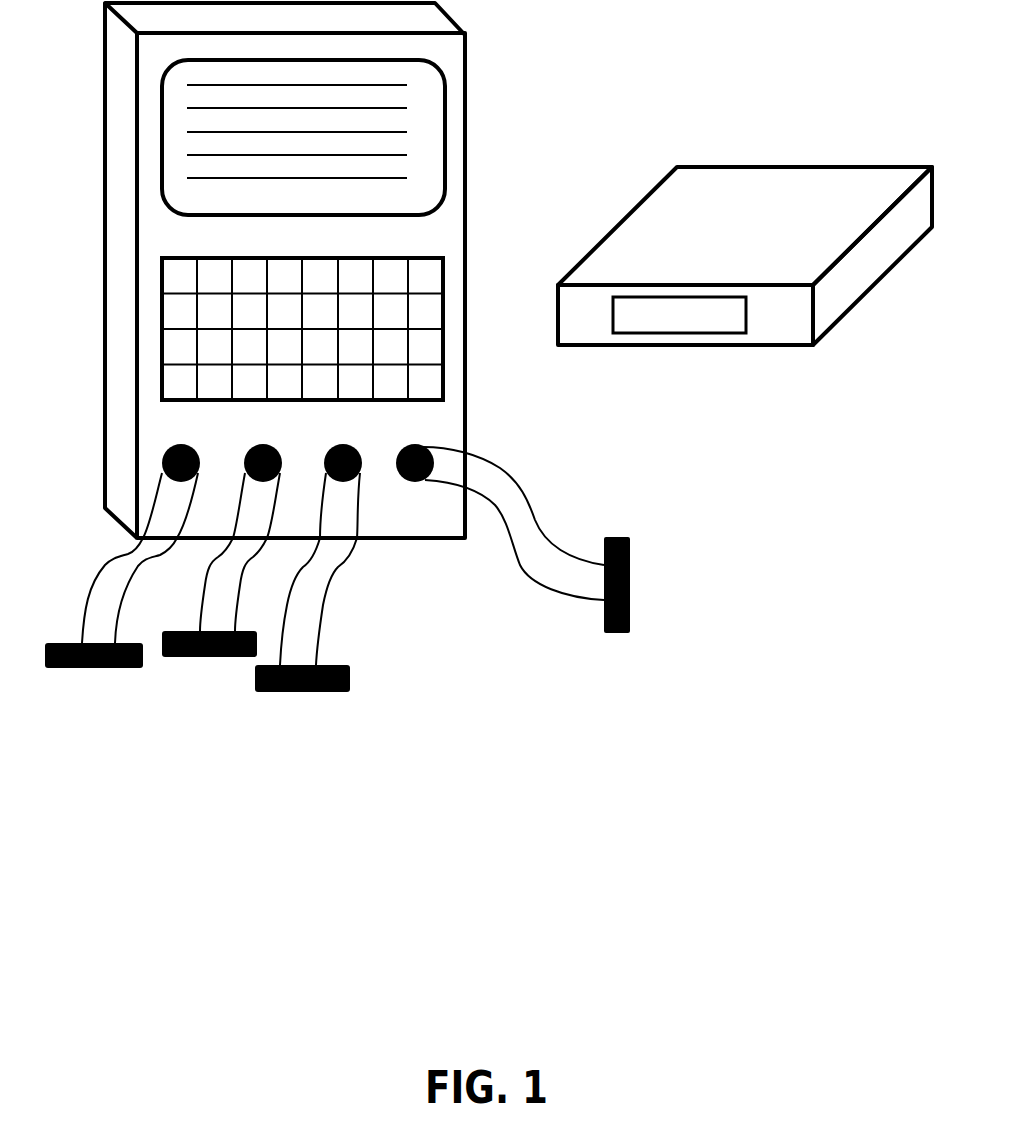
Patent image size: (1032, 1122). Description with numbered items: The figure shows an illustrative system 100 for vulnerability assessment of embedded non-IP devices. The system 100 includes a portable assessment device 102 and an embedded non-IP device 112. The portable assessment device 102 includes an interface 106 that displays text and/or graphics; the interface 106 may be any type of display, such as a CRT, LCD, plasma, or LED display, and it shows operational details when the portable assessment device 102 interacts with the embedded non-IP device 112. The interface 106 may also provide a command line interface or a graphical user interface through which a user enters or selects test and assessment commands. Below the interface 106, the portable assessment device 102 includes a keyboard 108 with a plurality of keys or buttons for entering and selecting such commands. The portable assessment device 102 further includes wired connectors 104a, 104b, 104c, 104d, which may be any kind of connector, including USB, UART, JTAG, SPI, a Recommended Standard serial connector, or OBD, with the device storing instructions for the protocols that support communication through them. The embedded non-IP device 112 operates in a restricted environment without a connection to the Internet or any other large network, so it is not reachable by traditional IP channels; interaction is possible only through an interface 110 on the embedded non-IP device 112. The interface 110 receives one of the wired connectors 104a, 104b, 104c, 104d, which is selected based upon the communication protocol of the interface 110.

The system 100 is at (474, 528).
The portable assessment device 102 is at (325, 429).
The wired connector 104a is at (80, 668).
The wired connector 104b is at (202, 657).
The wired connector 104c is at (302, 692).
The wired connector 104d is at (603, 633).
The interface 106 is at (430, 143).
The keyboard 108 is at (430, 283).
The interface 110 is at (635, 318).
The embedded non-IP device 112 is at (738, 290).